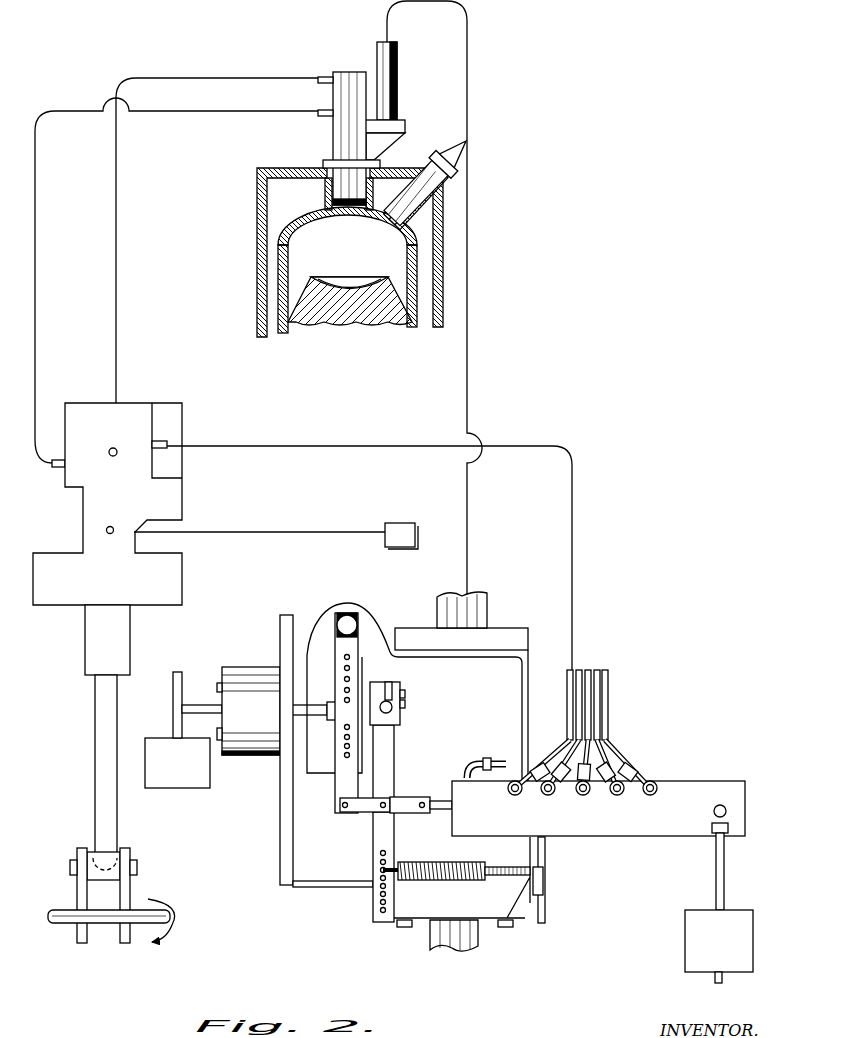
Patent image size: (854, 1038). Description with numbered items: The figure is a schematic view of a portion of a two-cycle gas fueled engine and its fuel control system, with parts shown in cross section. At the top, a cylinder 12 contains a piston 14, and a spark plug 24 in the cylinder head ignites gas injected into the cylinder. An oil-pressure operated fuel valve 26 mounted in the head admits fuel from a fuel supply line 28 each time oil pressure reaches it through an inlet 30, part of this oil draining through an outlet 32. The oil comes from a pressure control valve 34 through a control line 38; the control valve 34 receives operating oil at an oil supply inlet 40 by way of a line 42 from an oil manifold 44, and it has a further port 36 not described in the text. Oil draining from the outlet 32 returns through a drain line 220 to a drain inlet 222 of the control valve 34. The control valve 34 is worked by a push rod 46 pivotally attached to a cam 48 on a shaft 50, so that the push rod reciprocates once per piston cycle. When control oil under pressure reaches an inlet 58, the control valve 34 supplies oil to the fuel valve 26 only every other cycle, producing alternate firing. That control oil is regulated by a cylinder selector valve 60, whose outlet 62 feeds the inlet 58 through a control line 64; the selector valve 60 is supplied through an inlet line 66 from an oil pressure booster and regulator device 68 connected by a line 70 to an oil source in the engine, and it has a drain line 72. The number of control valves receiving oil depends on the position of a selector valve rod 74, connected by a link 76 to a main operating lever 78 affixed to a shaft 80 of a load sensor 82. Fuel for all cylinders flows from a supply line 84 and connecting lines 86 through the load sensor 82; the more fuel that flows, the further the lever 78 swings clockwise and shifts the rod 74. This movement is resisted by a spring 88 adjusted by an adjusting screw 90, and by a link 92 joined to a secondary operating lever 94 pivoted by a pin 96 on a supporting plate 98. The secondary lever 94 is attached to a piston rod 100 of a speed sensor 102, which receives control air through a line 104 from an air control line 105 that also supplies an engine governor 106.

The cylinder 12 is at (288, 263).
The piston 14 is at (398, 277).
The spark plug 24 is at (462, 170).
The fuel valve 26 is at (351, 69).
The fuel supply line 28 is at (398, 82).
The inlet 30 is at (325, 78).
The outlet 32 is at (326, 117).
The pressure control valve 34 is at (80, 519).
The valve port 36 is at (112, 447).
The control line 38 is at (116, 240).
The oil supply inlet 40 is at (106, 531).
The line 42 is at (246, 532).
The oil manifold 44 is at (404, 523).
The push rod 46 is at (95, 750).
The cam 48 is at (135, 880).
The shaft 50 is at (70, 910).
The inlet 58 is at (163, 441).
The cylinder selector valve 60 is at (673, 779).
The outlet 62 is at (528, 766).
The control line 64 is at (514, 451).
The inlet line 66 is at (716, 876).
The oil pressure booster and regulator device 68 is at (685, 916).
The line 70 is at (714, 980).
The drain line 72 is at (497, 757).
The selector valve rod 74 is at (440, 800).
The link 76 is at (405, 814).
The main operating lever 78 is at (373, 851).
The shaft 80 is at (392, 710).
The load sensor 82 is at (510, 627).
The supply line 84 is at (445, 949).
The connecting lines 86 is at (440, 597).
The spring 88 is at (472, 881).
The adjusting screw 90 is at (512, 923).
The link 92 is at (362, 813).
The secondary operating lever 94 is at (335, 786).
The pin 96 is at (357, 615).
The supporting plate 98 is at (346, 601).
The piston rod 100 is at (318, 688).
The speed sensor 102 is at (237, 760).
The line 104 is at (198, 703).
The air control line 105 is at (173, 673).
The engine governor 106 is at (178, 790).
The drain line 220 is at (36, 302).
The drain inlet 222 is at (58, 468).